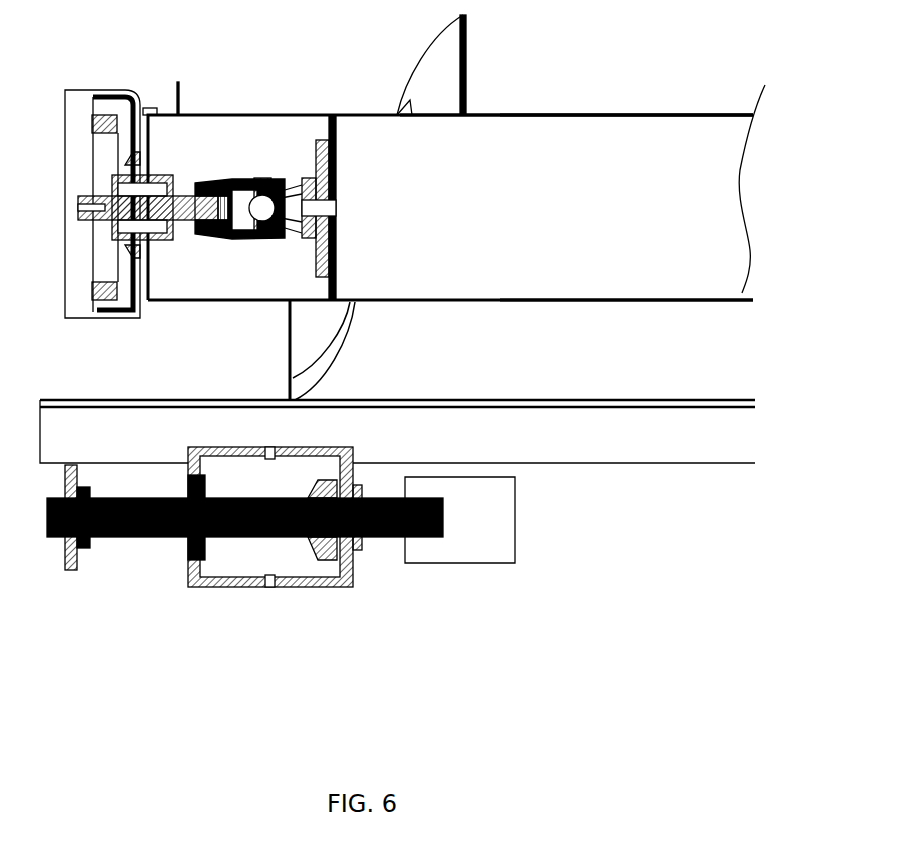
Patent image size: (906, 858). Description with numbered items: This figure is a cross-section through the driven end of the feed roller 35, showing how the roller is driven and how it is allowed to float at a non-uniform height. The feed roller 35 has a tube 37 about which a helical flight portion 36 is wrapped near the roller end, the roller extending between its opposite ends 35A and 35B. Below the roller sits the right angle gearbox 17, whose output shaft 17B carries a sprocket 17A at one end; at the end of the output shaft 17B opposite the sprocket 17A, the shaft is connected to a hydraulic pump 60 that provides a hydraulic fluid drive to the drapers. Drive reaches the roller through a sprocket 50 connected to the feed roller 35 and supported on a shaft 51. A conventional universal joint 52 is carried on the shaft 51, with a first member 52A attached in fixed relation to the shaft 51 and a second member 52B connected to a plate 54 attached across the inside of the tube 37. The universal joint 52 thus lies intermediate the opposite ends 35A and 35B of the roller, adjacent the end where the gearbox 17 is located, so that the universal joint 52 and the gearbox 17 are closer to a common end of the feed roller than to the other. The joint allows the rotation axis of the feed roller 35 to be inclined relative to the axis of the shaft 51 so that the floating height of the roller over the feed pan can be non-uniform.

The gearbox 17 is at (320, 590).
The sprocket 17A is at (84, 570).
The output shaft 17B is at (130, 540).
The feed roller 35 is at (641, 150).
The first end of feed roller 35A is at (202, 110).
The second end of feed roller 35B is at (808, 93).
The helical flight portion 36 is at (447, 48).
The tube 37 is at (549, 112).
The sprocket 50 is at (114, 92).
The shaft 51 is at (112, 195).
The universal joint 52 is at (251, 220).
The first member 52A is at (203, 232).
The joint cross pin 52B is at (278, 240).
The plate 54 is at (336, 143).
The hydraulic pump 60 is at (465, 565).